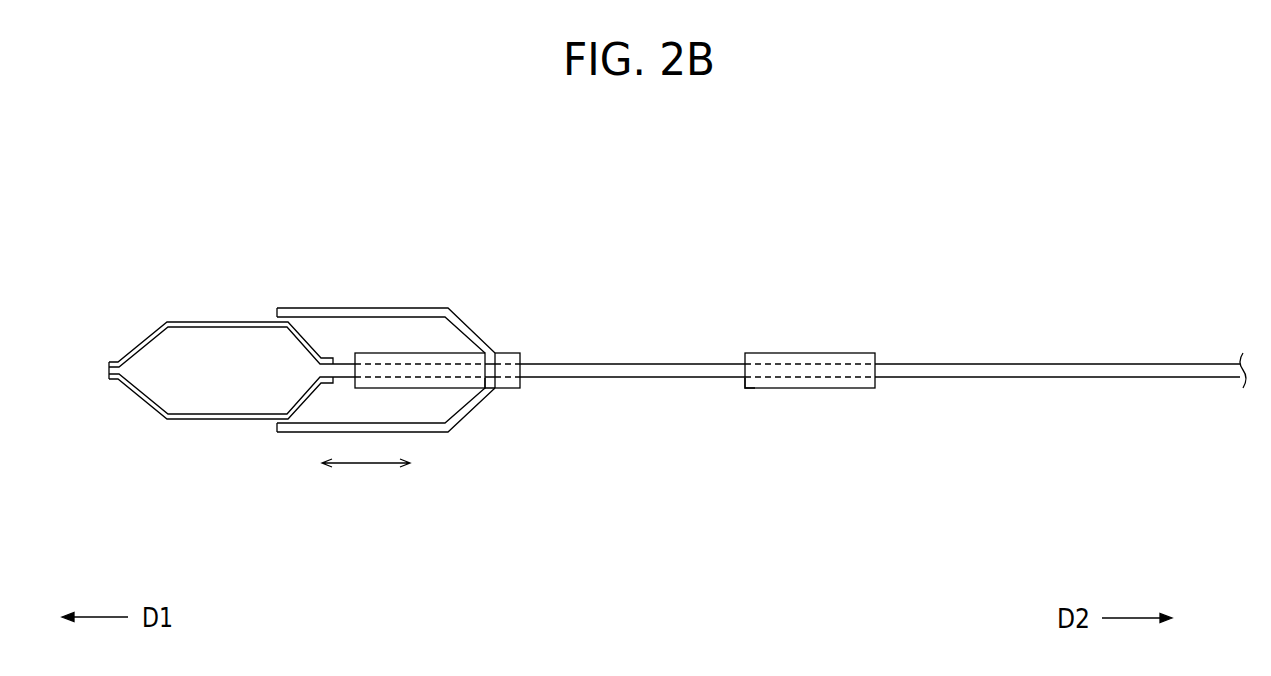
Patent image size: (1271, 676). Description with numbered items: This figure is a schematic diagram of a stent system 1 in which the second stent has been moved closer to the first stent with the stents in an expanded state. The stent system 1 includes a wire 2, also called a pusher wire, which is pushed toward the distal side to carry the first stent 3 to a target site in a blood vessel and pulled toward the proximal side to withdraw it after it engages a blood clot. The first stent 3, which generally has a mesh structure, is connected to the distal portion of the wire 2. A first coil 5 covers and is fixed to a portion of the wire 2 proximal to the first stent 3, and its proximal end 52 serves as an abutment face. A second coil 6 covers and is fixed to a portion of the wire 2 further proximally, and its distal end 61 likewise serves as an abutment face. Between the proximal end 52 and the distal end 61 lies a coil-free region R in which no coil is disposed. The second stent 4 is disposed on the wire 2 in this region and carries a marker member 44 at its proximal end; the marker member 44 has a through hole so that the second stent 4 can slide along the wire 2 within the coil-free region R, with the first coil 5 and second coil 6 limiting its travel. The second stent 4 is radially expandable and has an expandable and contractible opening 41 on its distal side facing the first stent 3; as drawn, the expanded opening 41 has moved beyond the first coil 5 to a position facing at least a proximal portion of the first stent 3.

The stent system 1 is at (988, 303).
The wire 2 is at (972, 378).
The first stent 3 is at (200, 320).
The second stent 4 is at (467, 318).
The opening 41 is at (290, 317).
The marker member 44 is at (510, 352).
The first coil 5 is at (396, 352).
The proximal end of the first coil 52 is at (485, 383).
The second coil 6 is at (815, 353).
The distal end of the second coil 61 is at (747, 386).
The coil-free region R is at (670, 362).